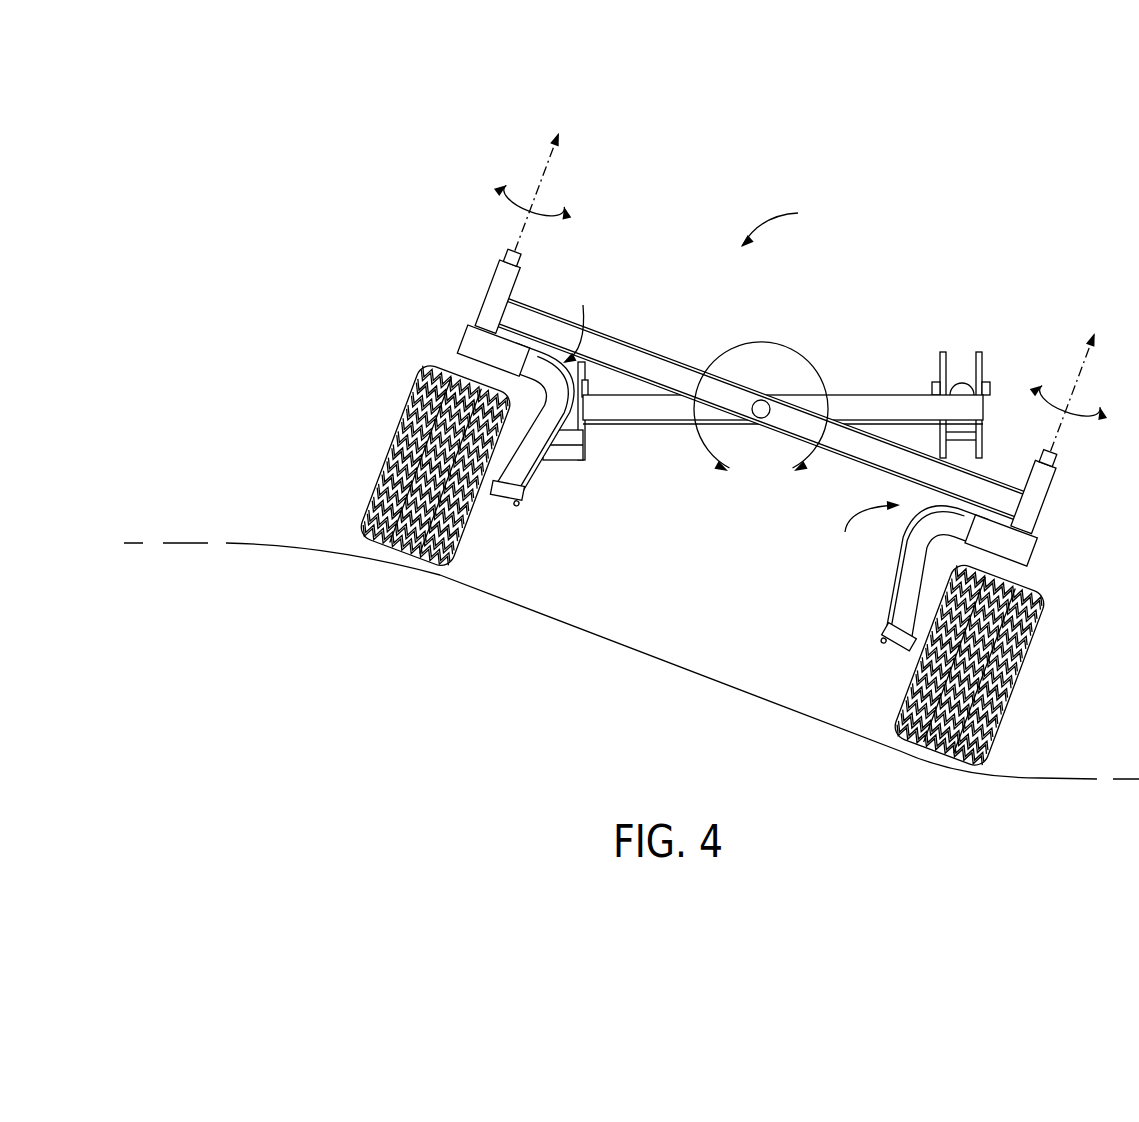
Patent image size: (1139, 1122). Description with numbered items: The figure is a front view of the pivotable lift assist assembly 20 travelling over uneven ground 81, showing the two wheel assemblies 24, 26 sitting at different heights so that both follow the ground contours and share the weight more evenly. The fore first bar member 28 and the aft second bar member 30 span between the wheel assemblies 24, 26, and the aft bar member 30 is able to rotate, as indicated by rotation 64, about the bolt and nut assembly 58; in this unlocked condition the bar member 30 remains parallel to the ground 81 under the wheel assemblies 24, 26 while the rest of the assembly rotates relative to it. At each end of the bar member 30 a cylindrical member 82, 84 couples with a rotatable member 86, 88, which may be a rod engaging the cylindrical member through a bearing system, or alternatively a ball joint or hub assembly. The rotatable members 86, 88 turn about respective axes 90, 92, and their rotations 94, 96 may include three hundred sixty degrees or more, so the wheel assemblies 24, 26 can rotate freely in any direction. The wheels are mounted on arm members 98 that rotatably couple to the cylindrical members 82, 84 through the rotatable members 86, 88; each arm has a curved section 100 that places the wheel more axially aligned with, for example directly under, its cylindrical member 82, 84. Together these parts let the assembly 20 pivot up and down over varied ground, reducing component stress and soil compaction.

The pivotable lift assist assembly 20 is at (784, 226).
The wheel assembly 24 is at (996, 702).
The wheel assembly 26 is at (376, 492).
The first bar member 28 is at (645, 409).
The second bar member 30 is at (628, 357).
The bolt and nut assembly 58 is at (760, 418).
The rotation 64 is at (760, 343).
The uneven ground 81 is at (647, 726).
The cylindrical member 82 is at (494, 300).
The cylindrical member 84 is at (1036, 497).
The rotatable member 86 is at (505, 253).
The rotatable member 88 is at (1057, 461).
The axis 90 is at (519, 232).
The axis 92 is at (1060, 431).
The rotation 94 is at (562, 215).
The rotation 96 is at (1043, 384).
The arm member 98 is at (521, 467).
The curved section 100 is at (730, 417).